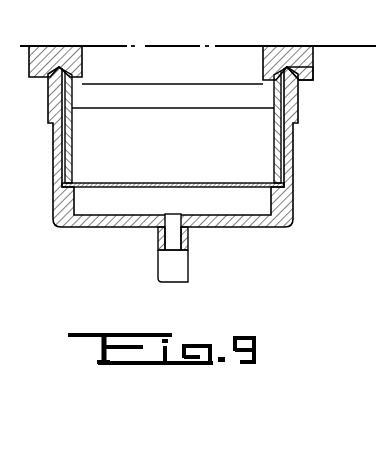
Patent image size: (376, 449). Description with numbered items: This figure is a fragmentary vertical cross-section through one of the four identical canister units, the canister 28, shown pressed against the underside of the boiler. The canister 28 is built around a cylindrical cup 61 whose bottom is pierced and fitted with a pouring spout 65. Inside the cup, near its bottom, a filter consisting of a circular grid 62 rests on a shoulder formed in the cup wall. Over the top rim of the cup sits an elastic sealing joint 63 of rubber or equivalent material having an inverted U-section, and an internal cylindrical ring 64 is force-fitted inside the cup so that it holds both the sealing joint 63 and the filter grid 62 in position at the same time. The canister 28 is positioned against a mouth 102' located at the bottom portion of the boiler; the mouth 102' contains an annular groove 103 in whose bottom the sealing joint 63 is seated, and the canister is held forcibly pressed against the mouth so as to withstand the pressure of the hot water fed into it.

The mouth 102' is at (191, 63).
The annular groove 103 is at (305, 68).
The elastic sealing joint 63 is at (297, 107).
The internal cylindrical ring 64 is at (271, 146).
The canister unit 28 is at (295, 177).
The circular grid 62 is at (255, 183).
The cylindrical cup 61 is at (278, 207).
The pouring spout 65 is at (180, 266).